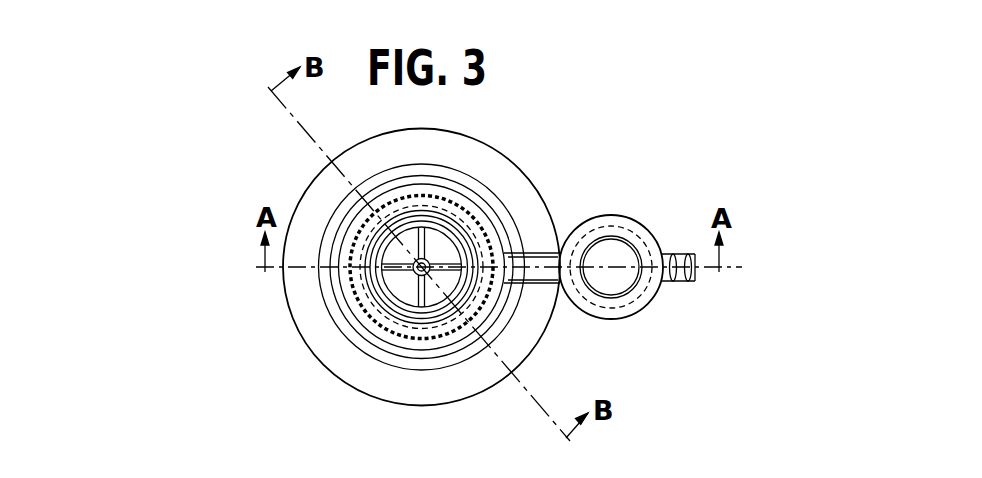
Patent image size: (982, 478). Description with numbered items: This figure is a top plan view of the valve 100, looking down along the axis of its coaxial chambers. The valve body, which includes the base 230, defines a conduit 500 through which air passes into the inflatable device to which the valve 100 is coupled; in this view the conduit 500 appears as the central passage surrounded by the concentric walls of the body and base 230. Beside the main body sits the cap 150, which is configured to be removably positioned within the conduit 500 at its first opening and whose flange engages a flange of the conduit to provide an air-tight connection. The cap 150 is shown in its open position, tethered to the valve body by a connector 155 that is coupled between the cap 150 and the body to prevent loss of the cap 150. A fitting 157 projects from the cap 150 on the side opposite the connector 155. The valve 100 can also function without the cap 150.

The valve 100 is at (185, 190).
The base 230 is at (483, 153).
The connector 155 is at (541, 263).
The cap 150 is at (638, 217).
The nozzle fitting 157 is at (695, 283).
The conduit 500 is at (403, 282).